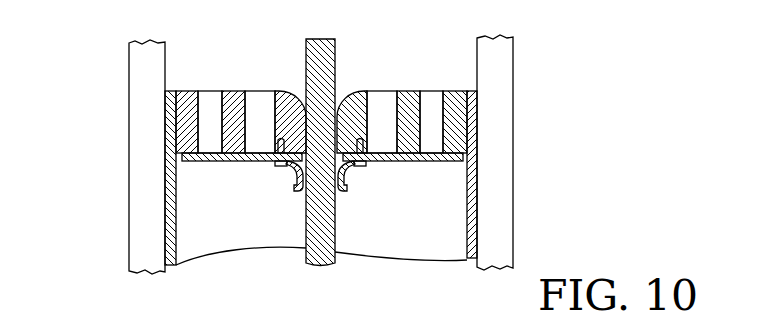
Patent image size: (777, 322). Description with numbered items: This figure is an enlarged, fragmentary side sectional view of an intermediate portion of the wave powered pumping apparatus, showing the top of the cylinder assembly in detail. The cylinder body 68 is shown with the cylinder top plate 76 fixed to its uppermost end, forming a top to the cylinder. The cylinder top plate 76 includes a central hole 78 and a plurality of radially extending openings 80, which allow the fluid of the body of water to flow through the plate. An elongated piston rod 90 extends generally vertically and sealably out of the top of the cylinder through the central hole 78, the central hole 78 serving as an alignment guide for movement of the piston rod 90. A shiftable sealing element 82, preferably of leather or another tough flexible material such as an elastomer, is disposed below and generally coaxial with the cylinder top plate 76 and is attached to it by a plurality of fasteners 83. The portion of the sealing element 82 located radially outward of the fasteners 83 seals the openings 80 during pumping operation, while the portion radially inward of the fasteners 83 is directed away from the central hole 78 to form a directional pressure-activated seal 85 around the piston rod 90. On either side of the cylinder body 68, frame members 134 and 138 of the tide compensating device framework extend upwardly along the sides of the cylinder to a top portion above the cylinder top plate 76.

The frame member 134 is at (148, 117).
The frame member 138 is at (492, 114).
The cylinder body 68 is at (473, 236).
The cylinder top plate 76 is at (235, 102).
The central hole 78 is at (349, 78).
The radially extending openings 80 is at (429, 103).
The shiftable sealing element 82 is at (234, 163).
The fasteners 83 is at (363, 168).
The directional pressure-activated seal 85 is at (276, 200).
The piston rod 90 is at (320, 258).